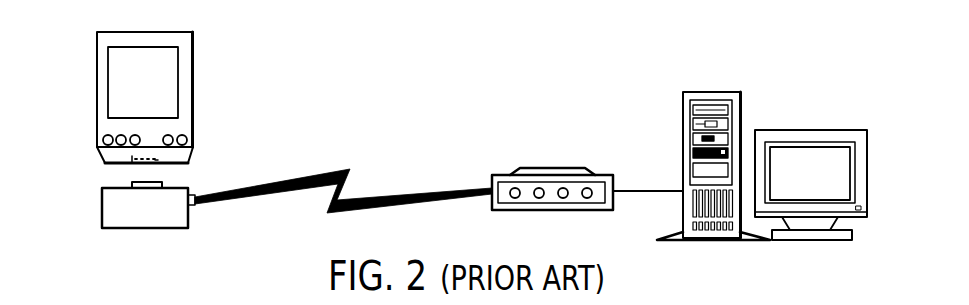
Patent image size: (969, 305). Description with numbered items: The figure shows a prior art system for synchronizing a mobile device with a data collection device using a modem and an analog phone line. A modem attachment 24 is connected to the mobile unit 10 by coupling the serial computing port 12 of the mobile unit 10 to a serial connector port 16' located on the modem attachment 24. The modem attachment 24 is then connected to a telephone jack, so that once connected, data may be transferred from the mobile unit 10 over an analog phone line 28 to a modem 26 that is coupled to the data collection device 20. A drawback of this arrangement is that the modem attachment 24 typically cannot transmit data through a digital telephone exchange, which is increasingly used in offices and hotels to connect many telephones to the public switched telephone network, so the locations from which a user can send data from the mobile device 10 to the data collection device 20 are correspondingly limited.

The mobile unit 10 is at (220, 59).
The serial computing port 12 is at (158, 160).
The serial connector port 16' is at (92, 167).
The modem attachment 24 is at (125, 208).
The analog phone line 28 is at (339, 168).
The modem 26 is at (550, 168).
The data collection device 20 is at (766, 89).